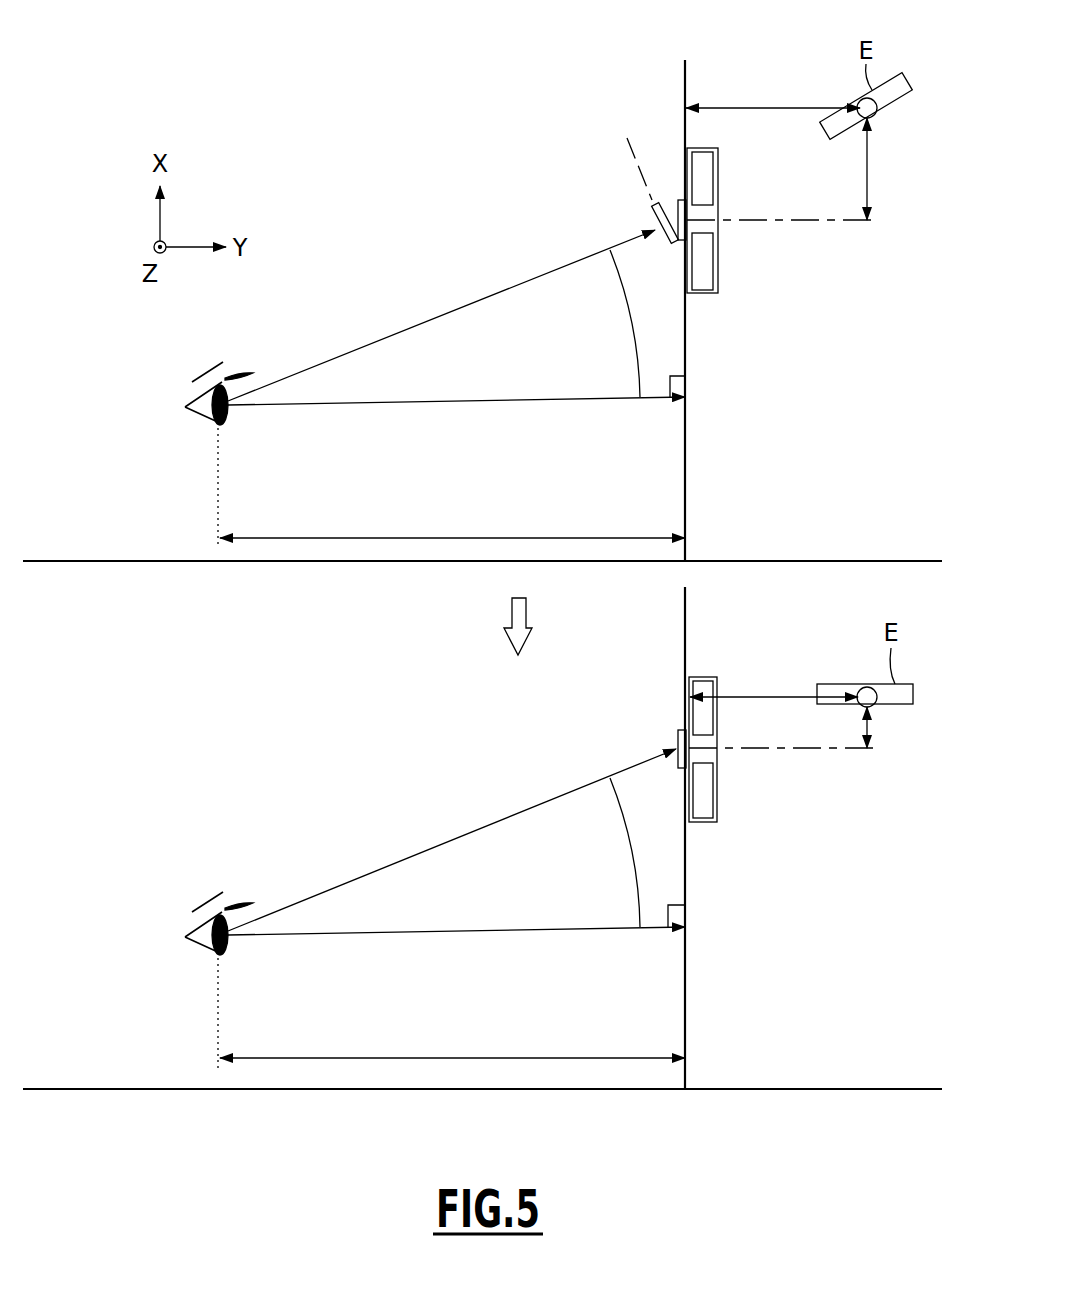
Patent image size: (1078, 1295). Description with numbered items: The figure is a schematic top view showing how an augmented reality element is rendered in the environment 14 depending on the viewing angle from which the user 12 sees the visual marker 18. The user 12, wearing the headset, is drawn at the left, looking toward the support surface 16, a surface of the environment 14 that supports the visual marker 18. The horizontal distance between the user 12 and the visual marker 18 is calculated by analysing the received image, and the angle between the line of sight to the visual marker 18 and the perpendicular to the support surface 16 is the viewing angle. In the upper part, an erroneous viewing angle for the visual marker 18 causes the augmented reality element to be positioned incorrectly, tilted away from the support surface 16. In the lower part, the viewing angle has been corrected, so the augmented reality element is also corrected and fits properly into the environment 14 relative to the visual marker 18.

The user 12 is at (205, 403).
The environment 14 is at (157, 467).
The support surface 16 is at (687, 73).
The visual marker 18 is at (662, 200).